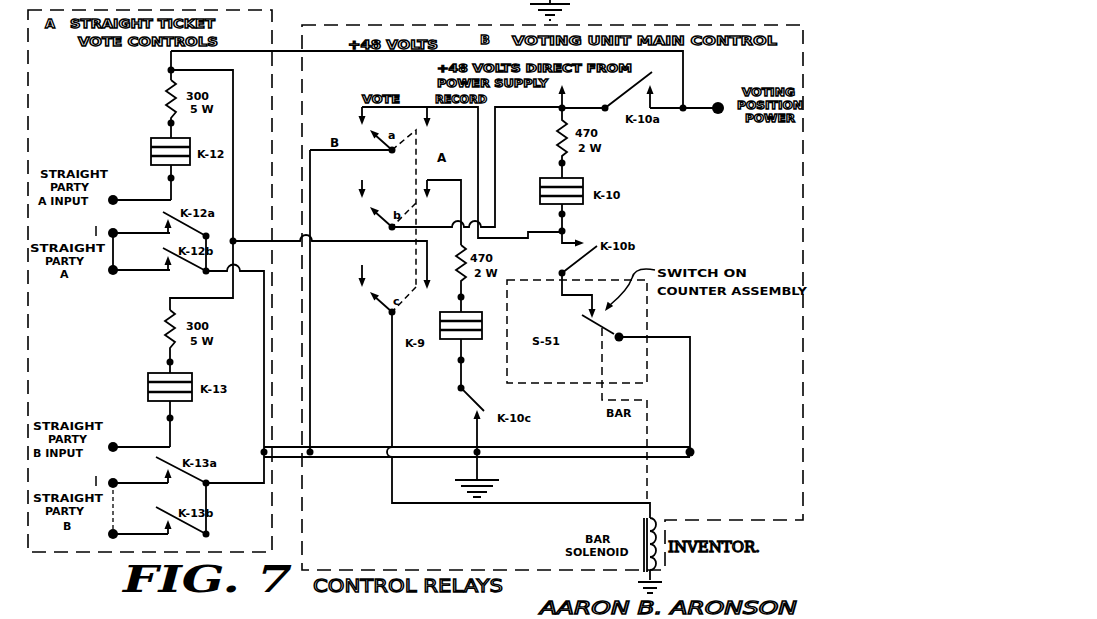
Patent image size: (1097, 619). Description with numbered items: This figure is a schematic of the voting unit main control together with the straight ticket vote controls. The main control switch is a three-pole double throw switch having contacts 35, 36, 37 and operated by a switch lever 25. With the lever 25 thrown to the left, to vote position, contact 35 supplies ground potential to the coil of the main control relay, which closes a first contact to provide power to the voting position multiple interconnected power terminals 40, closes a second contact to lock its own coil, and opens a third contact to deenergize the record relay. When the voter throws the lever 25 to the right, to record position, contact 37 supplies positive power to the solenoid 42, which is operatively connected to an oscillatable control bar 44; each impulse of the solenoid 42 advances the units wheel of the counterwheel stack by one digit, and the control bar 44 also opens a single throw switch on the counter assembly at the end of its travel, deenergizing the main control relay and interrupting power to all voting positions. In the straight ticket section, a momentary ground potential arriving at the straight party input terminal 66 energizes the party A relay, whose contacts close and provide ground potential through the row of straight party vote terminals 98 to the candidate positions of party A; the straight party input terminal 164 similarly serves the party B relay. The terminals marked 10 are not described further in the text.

The straight party input terminal 66 is at (106, 203).
The straight party vote terminals 98 is at (116, 268).
The terminal 10 is at (128, 413).
The straight party input terminal 164 is at (110, 444).
The switch contact 35 is at (390, 153).
The switch contact 36 is at (390, 228).
The switch contact 37 is at (390, 316).
The switch lever 25 is at (418, 176).
The voting position power terminals 40 is at (718, 114).
The control bar 44 is at (648, 434).
The solenoid 42 is at (641, 564).